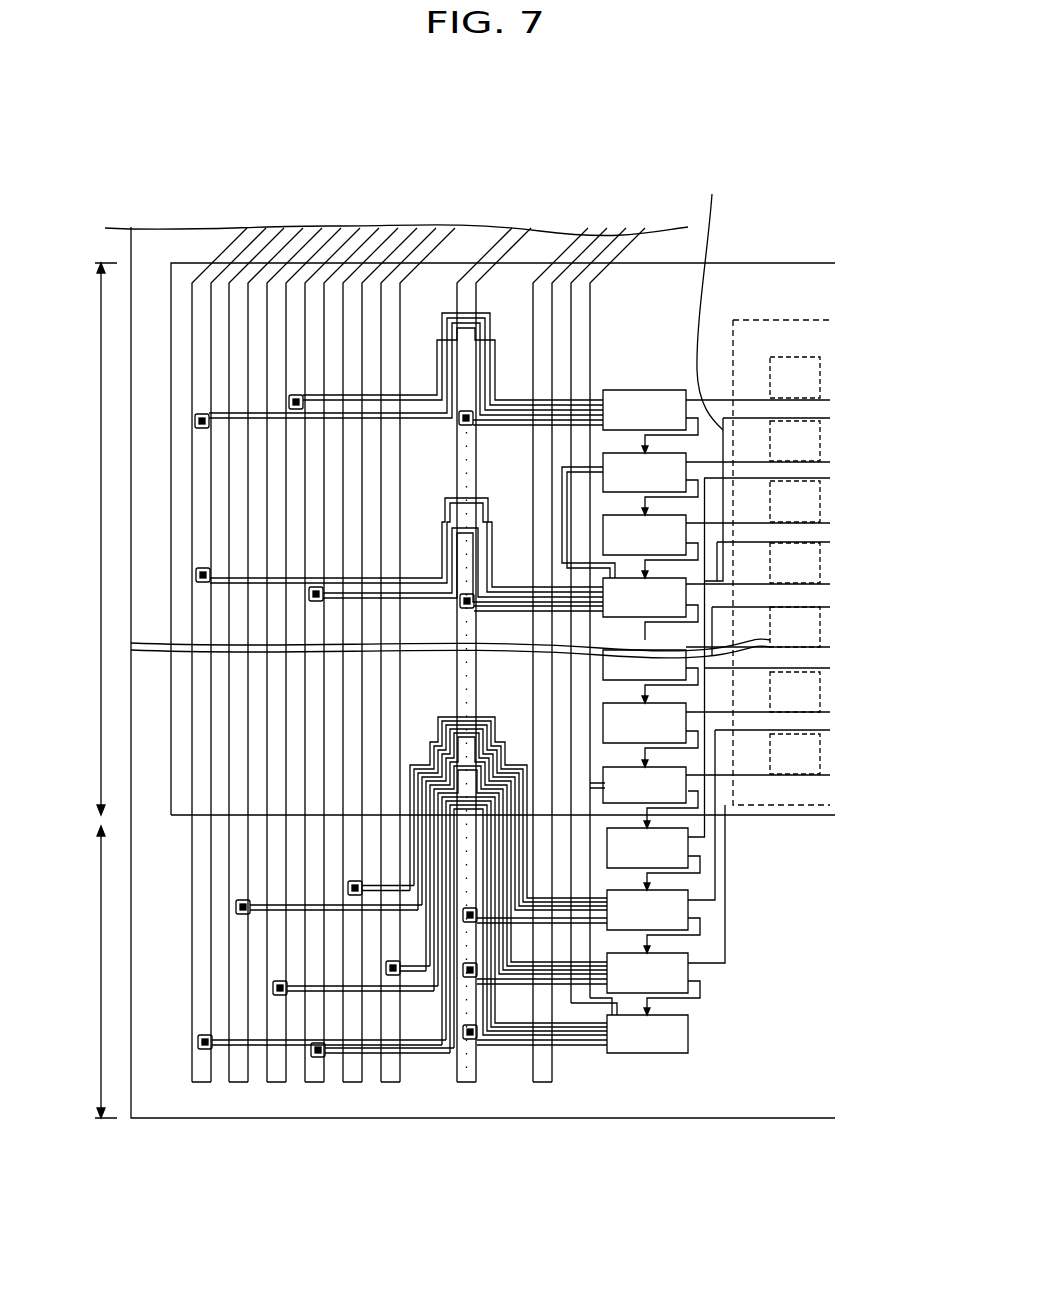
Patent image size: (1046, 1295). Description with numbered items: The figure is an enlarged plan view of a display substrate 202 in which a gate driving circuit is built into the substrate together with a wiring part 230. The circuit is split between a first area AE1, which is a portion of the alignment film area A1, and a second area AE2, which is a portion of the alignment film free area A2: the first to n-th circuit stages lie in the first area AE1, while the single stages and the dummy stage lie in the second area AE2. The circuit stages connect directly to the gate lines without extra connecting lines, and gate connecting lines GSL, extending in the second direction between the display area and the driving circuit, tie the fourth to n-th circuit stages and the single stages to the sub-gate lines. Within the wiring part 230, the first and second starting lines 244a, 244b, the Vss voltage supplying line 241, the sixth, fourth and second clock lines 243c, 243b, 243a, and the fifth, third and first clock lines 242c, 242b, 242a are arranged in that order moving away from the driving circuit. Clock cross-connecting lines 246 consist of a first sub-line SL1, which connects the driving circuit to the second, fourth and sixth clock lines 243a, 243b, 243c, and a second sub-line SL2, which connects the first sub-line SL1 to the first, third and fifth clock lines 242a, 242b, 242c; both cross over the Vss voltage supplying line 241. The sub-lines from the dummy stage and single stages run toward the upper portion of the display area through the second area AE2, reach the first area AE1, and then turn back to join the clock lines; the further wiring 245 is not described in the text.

The display substrate 202 is at (511, 98).
The wiring part 230 is at (661, 156).
The Vss voltage supplying line 241 is at (506, 229).
The first clock line 242a is at (248, 230).
The third clock line 242b is at (285, 233).
The fifth clock line 242c is at (319, 232).
The second clock line 243a is at (361, 234).
The fourth clock line 243b is at (399, 232).
The sixth clock line 243c is at (437, 234).
The first starting line 244a is at (578, 236).
The second starting line 244b is at (604, 677).
The connection wiring 245 is at (523, 965).
The clock cross-connecting lines 246 is at (596, 715).
The first sub-line SL1 is at (569, 978).
The second sub-line SL2 is at (587, 990).
The gate connecting lines GSL is at (717, 300).
The alignment film area A1 is at (762, 280).
The alignment film free area A2 is at (681, 242).
The first area AE1 is at (90, 539).
The second area AE2 is at (90, 972).